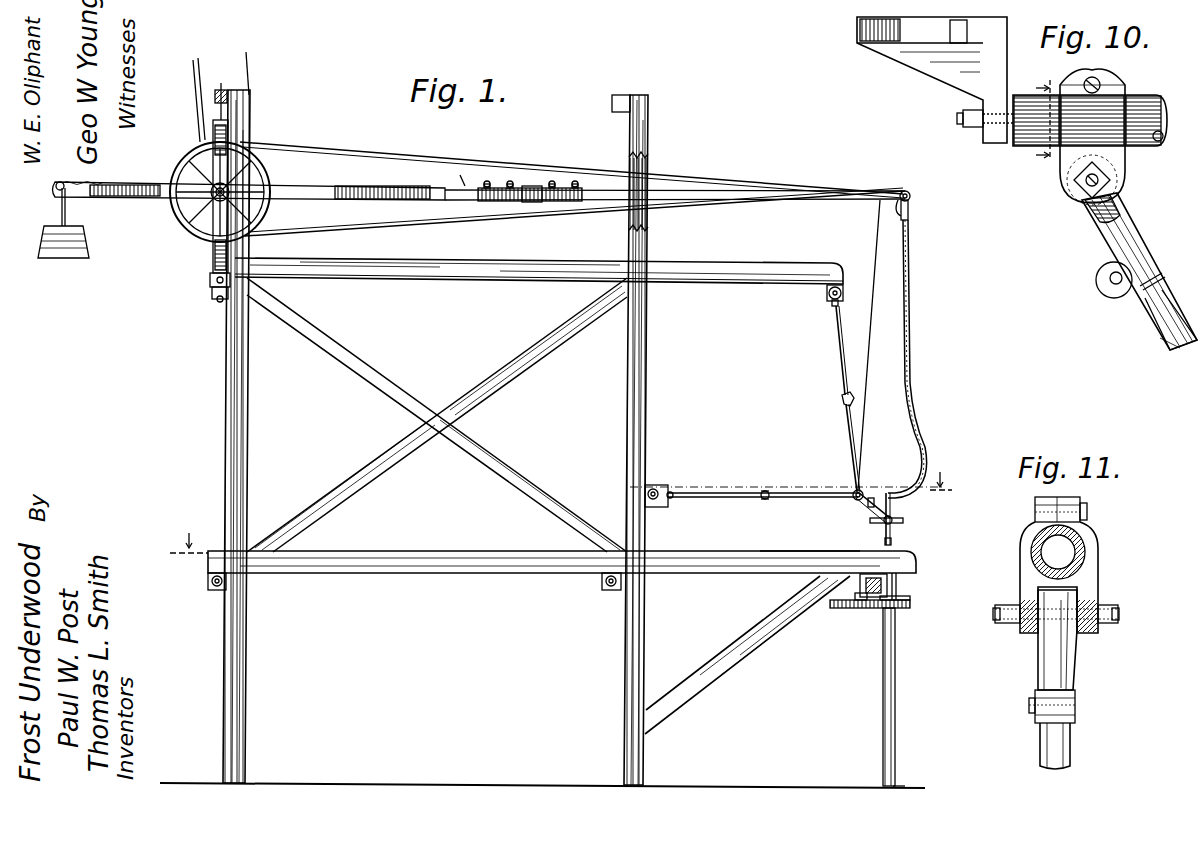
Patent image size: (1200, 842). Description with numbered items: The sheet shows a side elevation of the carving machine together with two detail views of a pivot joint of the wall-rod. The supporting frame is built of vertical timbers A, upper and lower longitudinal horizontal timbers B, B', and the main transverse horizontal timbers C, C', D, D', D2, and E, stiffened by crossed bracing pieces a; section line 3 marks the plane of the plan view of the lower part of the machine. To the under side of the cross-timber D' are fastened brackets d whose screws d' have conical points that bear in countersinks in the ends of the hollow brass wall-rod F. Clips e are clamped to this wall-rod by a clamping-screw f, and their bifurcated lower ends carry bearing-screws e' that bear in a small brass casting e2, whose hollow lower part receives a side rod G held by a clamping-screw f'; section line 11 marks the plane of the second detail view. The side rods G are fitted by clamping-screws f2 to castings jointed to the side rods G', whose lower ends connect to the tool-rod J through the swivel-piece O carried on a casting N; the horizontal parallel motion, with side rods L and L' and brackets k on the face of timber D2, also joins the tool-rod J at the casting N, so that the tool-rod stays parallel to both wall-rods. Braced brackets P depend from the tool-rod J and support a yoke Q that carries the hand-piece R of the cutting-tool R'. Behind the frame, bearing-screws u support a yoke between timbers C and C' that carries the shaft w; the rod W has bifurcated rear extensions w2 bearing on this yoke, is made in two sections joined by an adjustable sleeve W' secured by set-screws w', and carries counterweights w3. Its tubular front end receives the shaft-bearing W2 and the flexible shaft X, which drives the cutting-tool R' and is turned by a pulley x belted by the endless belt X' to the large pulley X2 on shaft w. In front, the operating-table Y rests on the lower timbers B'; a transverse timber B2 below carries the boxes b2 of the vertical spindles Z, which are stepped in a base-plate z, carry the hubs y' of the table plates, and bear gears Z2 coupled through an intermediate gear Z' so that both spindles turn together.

In FIG. 1, the vertical timbers A is at (250, 122).
In FIG. 1, the upper longitudinal horizontal timbers B is at (539, 279).
In FIG. 1, the lower longitudinal horizontal timbers B' is at (562, 567).
In FIG. 1, the transverse timber B2 is at (873, 578).
In FIG. 1, the rear transverse horizontal timber C is at (217, 165).
In FIG. 1, the rear transverse horizontal timber C' is at (208, 289).
In FIG. 1, the transverse horizontal timber D is at (622, 93).
In FIG. 1, the cross-timber D' is at (817, 297).
In FIG. 1, the cross timber D2 is at (658, 506).
In FIG. 1, the transverse horizontal timbers E is at (214, 590).
In FIG. 1, the side rods G is at (828, 350).
In FIG. 10, the side rods G is at (1169, 320).
In FIG. 11, the side rods G is at (1067, 746).
In FIG. 1, the side rods G' is at (840, 442).
In FIG. 1, the tool-rod J is at (876, 505).
In FIG. 1, the side rods L is at (787, 503).
In FIG. 1, the side rods L' is at (784, 504).
In FIG. 1, the casting N is at (868, 505).
In FIG. 1, the swivel-piece O is at (862, 490).
In FIG. 1, the braced brackets P is at (882, 522).
In FIG. 1, the yoke Q is at (893, 517).
In FIG. 1, the shank or hand-piece R is at (896, 522).
In FIG. 1, the cutting-tool R' is at (900, 540).
In FIG. 1, the rod W is at (592, 173).
In FIG. 1, the sleeve W' is at (530, 203).
In FIG. 1, the set-screws w' is at (531, 178).
In FIG. 1, the shaft w is at (203, 256).
In FIG. 1, the bifurcated rear end extensions w2 is at (312, 196).
In FIG. 1, the weights w3 is at (89, 250).
In FIG. 1, the shaft-bearing W2 is at (909, 214).
In FIG. 1, the flexible shaft X is at (909, 359).
In FIG. 1, the endless belt X' is at (571, 188).
In FIG. 1, the large pulley X2 is at (248, 75).
In FIG. 1, the pulley x is at (908, 190).
In FIG. 1, the operating-table Y is at (789, 547).
In FIG. 1, the hubs y' is at (909, 585).
In FIG. 1, the boxes b2 is at (897, 594).
In FIG. 1, the vertical spindles Z is at (896, 697).
In FIG. 1, the intermediate gear Z' is at (870, 616).
In FIG. 1, the gears Z2 is at (900, 609).
In FIG. 1, the base-plate z is at (902, 777).
In FIG. 1, the crossed pieces a is at (437, 415).
In FIG. 1, the brackets d is at (841, 300).
In FIG. 10, the brackets d is at (932, 80).
In FIG. 10, the screws d' is at (985, 132).
In FIG. 10, the clips e is at (1092, 136).
In FIG. 11, the clips e is at (1066, 577).
In FIG. 10, the bearing-screws e' is at (1086, 192).
In FIG. 11, the bearing-screws e' is at (1056, 624).
In FIG. 10, the casting e2 is at (1135, 230).
In FIG. 11, the casting e2 is at (1065, 640).
In FIG. 10, the clamping-screw f is at (1101, 74).
In FIG. 11, the clamping-screw f is at (1070, 509).
In FIG. 10, the clamping-screw f' is at (1127, 285).
In FIG. 11, the clamping-screw f' is at (1039, 706).
In FIG. 1, the clamping-screws f2 is at (868, 368).
In FIG. 10, the wall-rod F is at (1147, 102).
In FIG. 11, the wall-rod F is at (1086, 556).
In FIG. 1, the brackets k is at (671, 491).
In FIG. 1, the bearing-screws u is at (222, 90).
In FIG. 1, the section line 3 is at (563, 516).
In FIG. 10, the section line 11 is at (1041, 122).